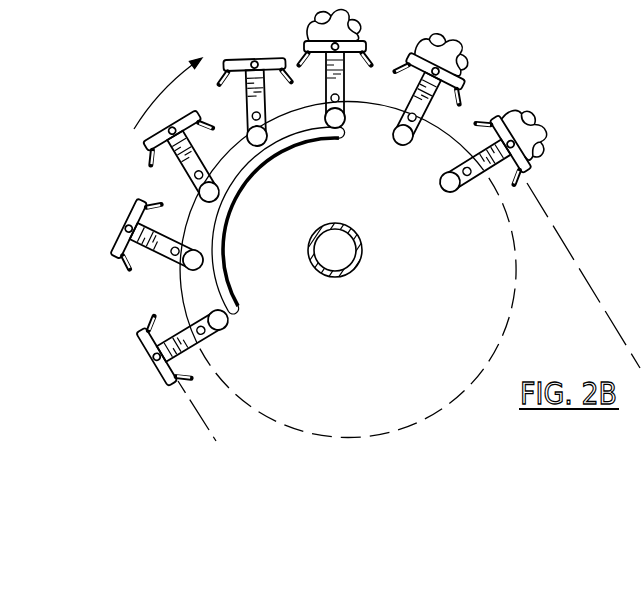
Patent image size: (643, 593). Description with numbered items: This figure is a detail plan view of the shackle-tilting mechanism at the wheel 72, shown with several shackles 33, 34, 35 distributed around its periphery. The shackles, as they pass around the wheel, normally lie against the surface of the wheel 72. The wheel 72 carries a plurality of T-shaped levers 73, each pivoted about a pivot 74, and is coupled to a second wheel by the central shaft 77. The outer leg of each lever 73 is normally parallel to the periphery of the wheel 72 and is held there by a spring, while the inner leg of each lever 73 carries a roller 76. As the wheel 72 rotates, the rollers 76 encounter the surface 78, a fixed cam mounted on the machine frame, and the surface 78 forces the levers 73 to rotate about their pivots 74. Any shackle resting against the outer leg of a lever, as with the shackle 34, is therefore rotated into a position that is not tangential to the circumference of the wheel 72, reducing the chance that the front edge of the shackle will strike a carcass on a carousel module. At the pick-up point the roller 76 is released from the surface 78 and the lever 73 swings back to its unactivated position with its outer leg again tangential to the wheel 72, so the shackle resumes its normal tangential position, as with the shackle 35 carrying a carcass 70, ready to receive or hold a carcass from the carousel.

The shackle 33 is at (146, 146).
The shackle 34 is at (229, 59).
The shackle 35 is at (364, 46).
The carcass 70 is at (352, 17).
The wheel 72 is at (478, 289).
The T-shaped lever 73 is at (176, 158).
The pivot 74 is at (202, 165).
The roller 76 is at (221, 196).
The shaft 77 is at (360, 261).
The surface 78 is at (213, 234).